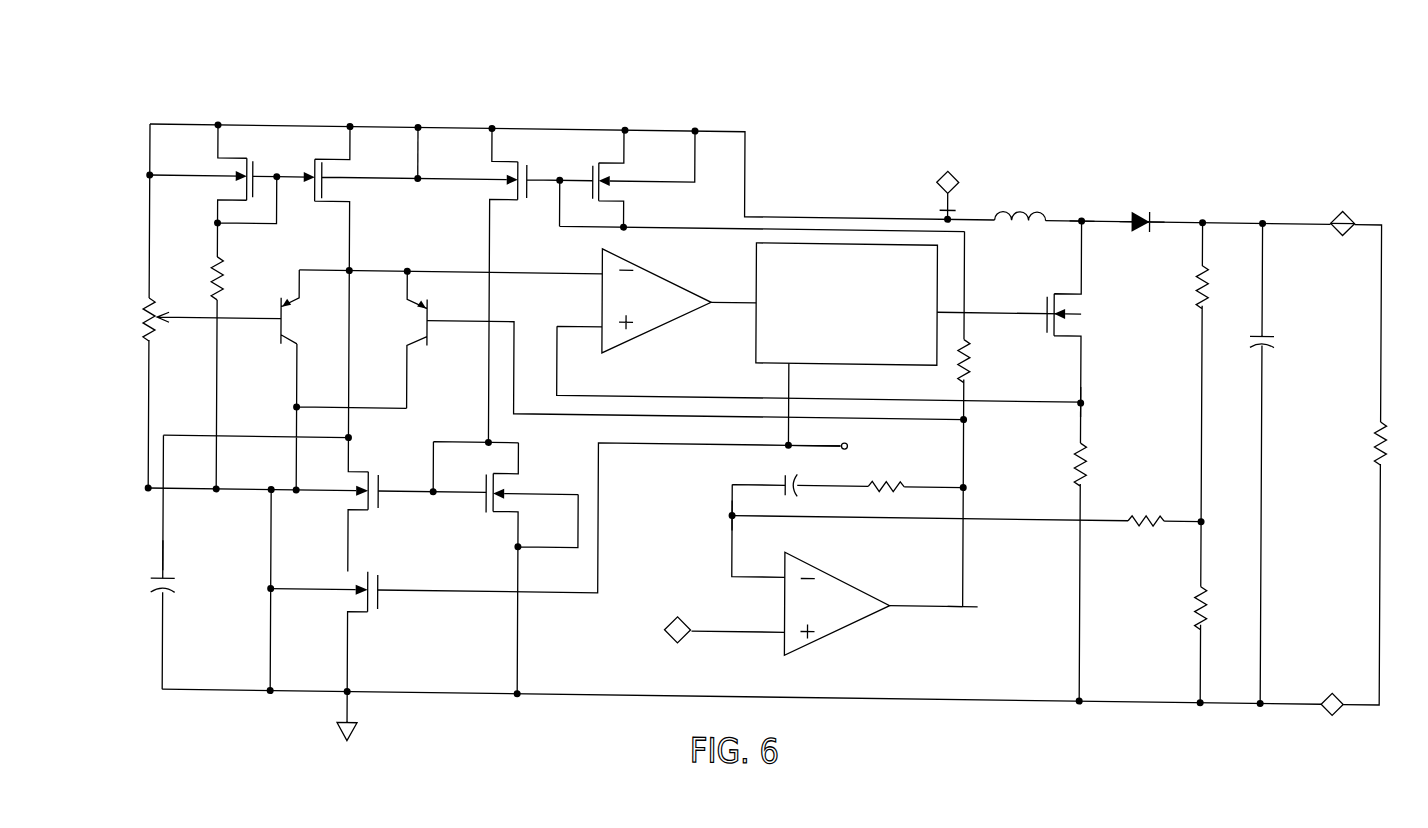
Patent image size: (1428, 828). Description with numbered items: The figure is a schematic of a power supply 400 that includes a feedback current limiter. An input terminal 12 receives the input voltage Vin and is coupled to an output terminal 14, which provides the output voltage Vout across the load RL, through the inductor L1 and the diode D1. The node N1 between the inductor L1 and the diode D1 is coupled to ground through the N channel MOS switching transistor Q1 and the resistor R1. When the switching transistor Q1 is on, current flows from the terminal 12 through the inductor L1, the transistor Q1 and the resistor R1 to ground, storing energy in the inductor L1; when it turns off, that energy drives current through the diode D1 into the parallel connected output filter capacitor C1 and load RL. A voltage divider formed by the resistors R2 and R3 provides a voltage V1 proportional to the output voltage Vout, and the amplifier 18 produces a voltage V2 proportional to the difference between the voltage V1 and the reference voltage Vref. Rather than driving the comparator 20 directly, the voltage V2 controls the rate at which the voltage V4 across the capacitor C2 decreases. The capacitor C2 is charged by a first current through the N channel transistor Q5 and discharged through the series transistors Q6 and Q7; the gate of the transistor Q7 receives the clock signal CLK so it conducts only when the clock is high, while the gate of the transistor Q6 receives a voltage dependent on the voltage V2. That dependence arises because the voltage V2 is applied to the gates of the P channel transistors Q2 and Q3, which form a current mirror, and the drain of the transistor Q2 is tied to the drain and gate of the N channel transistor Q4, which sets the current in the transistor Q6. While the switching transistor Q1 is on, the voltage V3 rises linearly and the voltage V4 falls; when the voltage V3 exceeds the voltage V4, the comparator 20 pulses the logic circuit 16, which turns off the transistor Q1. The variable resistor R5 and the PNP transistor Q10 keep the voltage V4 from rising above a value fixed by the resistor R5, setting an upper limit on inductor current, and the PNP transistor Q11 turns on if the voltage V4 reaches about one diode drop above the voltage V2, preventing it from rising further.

The power supply 400 is at (745, 97).
The input terminal 12 is at (940, 170).
The output terminal 14 is at (1343, 196).
The logic circuit 16 is at (924, 357).
The amplifier 18 is at (860, 611).
The comparator 20 is at (647, 266).
The input voltage Vin is at (960, 180).
The output voltage Vout is at (1343, 221).
The reference voltage Vref is at (652, 621).
The voltage V1 is at (733, 508).
The output voltage of amplifier V2 is at (967, 596).
The voltage V3 is at (1083, 390).
The voltage across capacitor C2 V4 is at (168, 552).
The clock signal CLK is at (870, 431).
The inductor L1 is at (1040, 193).
The node N1 is at (1083, 205).
The diode D1 is at (1151, 200).
The switching transistor Q1 is at (1078, 306).
The P channel MOS transistor Q2 is at (507, 154).
The P channel MOS transistor Q3 is at (609, 154).
The N channel MOS transistor Q4 is at (499, 512).
The N channel MOS transistor Q5 is at (345, 185).
The N channel MOS transistor Q6 is at (364, 464).
The N channel MOS transistor Q7 is at (412, 617).
The PNP transistor Q10 is at (285, 318).
The PNP transistor Q11 is at (428, 318).
The resistor R1 is at (1092, 572).
The resistor R2 is at (1218, 405).
The resistor R3 is at (1213, 645).
The variable resistor R5 is at (148, 297).
The load RL is at (1393, 444).
The output filter capacitor C1 is at (1274, 463).
The capacitor C2 is at (162, 596).